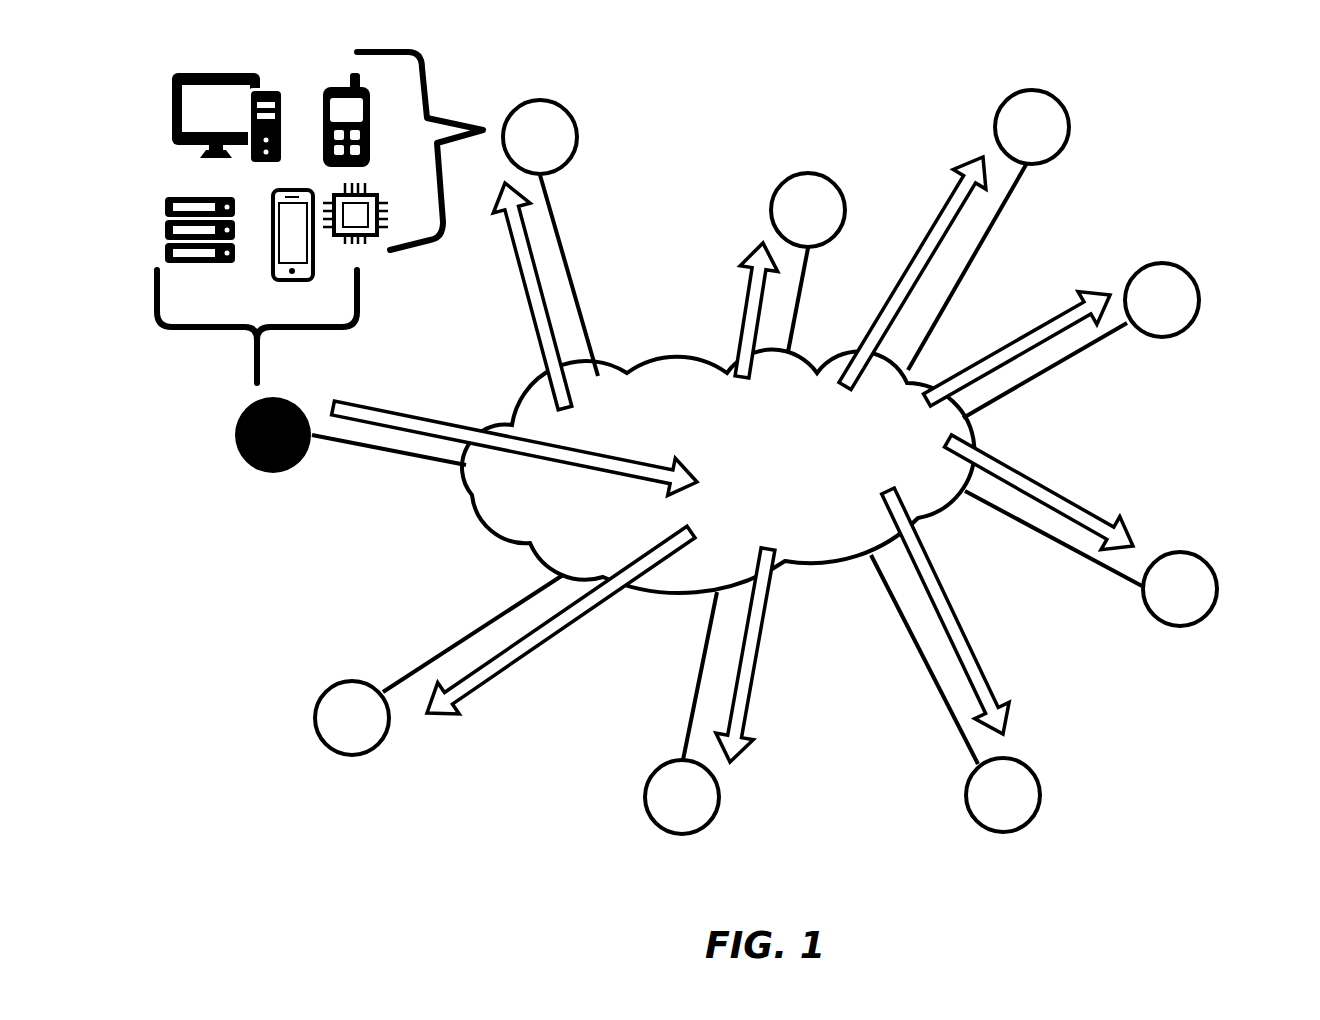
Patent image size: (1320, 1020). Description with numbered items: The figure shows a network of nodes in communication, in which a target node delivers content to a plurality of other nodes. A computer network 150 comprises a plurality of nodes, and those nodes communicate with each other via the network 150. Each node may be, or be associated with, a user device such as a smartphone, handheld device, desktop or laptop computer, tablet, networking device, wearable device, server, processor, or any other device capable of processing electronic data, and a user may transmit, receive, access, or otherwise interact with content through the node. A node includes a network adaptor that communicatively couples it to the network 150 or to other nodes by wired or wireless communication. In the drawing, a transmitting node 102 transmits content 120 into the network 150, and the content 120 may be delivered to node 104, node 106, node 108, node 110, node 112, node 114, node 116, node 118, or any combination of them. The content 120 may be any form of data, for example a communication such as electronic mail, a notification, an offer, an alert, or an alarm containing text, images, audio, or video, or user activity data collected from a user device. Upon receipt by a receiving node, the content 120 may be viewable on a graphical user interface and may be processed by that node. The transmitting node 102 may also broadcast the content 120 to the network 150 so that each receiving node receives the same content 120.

The transmitting node 102 is at (245, 468).
The node 104 is at (582, 137).
The node 106 is at (838, 180).
The node 108 is at (1073, 123).
The node 110 is at (1198, 300).
The node 112 is at (1178, 623).
The node 114 is at (1039, 814).
The node 116 is at (668, 833).
The node 118 is at (325, 747).
The content 120 is at (430, 423).
The computer network 150 is at (718, 471).